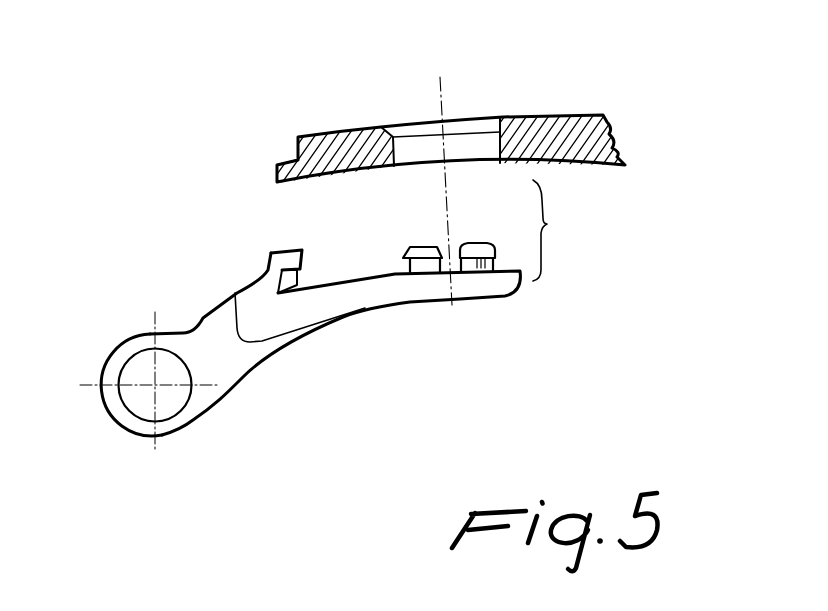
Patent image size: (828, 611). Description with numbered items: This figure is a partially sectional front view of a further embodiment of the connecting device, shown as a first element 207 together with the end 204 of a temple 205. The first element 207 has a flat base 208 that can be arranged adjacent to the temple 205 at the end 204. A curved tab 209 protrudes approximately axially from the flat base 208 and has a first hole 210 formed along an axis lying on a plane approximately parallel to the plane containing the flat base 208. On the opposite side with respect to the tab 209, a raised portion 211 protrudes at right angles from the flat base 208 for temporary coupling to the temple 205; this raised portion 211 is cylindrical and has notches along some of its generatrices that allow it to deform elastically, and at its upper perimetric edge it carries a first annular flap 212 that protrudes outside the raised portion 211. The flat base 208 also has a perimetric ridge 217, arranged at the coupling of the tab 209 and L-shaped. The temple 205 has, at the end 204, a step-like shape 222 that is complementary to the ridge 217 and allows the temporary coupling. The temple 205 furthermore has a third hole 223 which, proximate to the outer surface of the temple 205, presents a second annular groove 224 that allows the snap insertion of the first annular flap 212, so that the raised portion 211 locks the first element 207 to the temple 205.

The end 204 is at (297, 130).
The temple 205 is at (570, 118).
The first element 207 is at (196, 168).
The flat base 208 is at (368, 310).
The curved tab 209 is at (146, 450).
The first hole 210 is at (136, 372).
The raised portion 211 is at (502, 255).
The first annular flap 212 is at (423, 252).
The perimetric ridge 217 is at (284, 243).
The step-like shape 222 is at (278, 162).
The third hole 223 is at (490, 226).
The second annular groove 224 is at (408, 120).